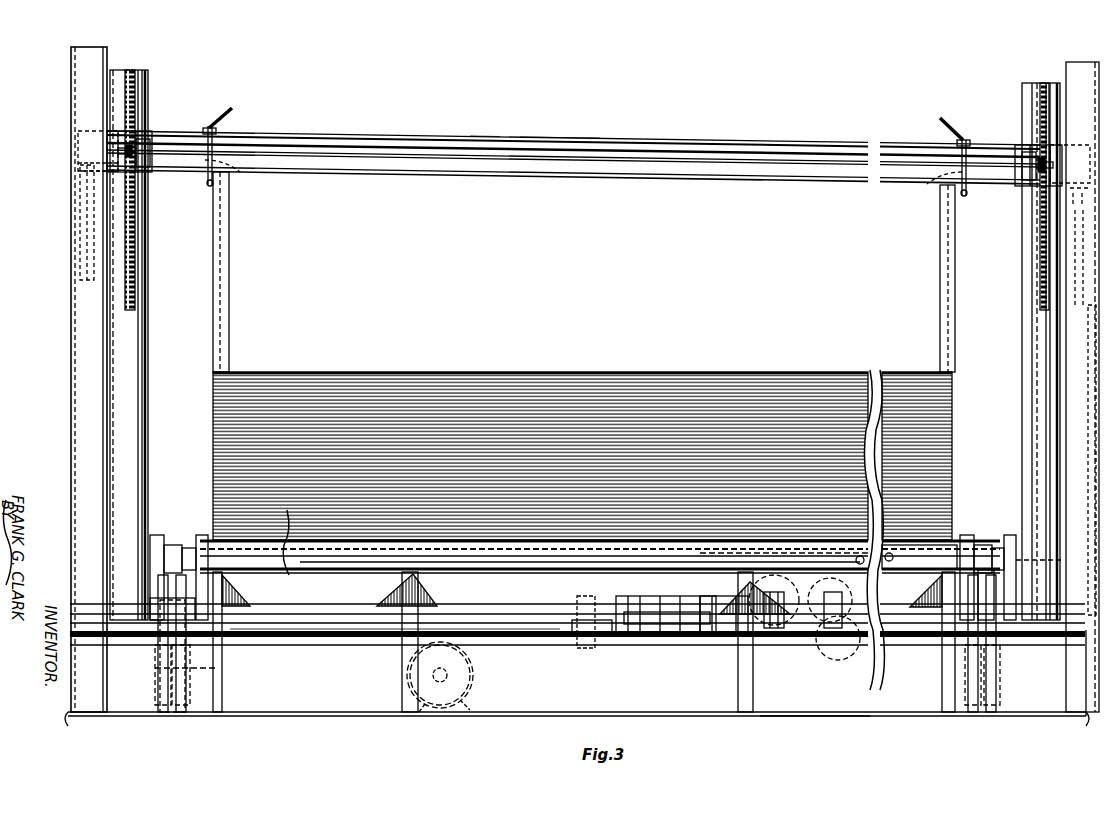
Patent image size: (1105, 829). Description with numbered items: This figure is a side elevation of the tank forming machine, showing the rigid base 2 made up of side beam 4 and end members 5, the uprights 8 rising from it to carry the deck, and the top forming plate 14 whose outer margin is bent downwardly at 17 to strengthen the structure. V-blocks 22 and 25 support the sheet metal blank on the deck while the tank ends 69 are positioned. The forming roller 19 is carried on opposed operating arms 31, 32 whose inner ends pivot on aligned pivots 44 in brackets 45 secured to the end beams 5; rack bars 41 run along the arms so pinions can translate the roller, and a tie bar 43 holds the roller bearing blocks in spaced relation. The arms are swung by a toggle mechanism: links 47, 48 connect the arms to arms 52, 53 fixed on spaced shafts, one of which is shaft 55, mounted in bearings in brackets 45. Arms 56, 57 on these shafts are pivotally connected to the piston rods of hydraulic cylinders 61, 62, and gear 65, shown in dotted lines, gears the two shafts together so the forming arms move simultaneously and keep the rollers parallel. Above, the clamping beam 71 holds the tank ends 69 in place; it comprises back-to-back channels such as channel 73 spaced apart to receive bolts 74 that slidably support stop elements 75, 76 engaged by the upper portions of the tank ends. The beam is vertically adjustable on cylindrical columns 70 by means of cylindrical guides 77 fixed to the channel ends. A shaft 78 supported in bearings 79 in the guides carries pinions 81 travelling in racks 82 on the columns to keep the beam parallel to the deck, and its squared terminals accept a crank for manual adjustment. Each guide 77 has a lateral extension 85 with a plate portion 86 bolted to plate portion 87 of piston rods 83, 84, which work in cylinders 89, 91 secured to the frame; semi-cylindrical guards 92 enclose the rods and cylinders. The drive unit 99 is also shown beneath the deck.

The base 2 is at (824, 712).
The side beam 4 is at (790, 716).
The end member 5 is at (66, 716).
The upright 8 is at (217, 708).
The metallic plate 14 is at (535, 572).
The downwardly bent marginal edge 17 is at (818, 608).
The forming roller 19 is at (486, 572).
The V-block 22 is at (582, 530).
The V-block 25 is at (893, 572).
The operating arm 31 is at (189, 548).
The operating arm 32 is at (172, 545).
The rack bar 41 is at (996, 572).
The tie bar 43 is at (820, 572).
The pivot 44 is at (1048, 560).
The bracket 45 is at (156, 535).
The toggle link 47 is at (192, 668).
The toggle link 48 is at (160, 668).
The arm 52 is at (182, 712).
The arm 53 is at (165, 712).
The shaft 55 is at (302, 628).
The arm 56 is at (650, 652).
The arm 57 is at (704, 652).
The hydraulic cylinder 61 is at (633, 660).
The hydraulic cylinder 62 is at (716, 660).
The gear 65 is at (578, 650).
The tank end 69 is at (230, 306).
The upright column 70 is at (146, 350).
The clamping beam 71 is at (614, 182).
The channel 73 is at (603, 150).
The bolt 74 is at (242, 172).
The stop element 75 is at (207, 186).
The stop element 76 is at (966, 195).
The cylindrical guide 77 is at (146, 135).
The shaft 78 is at (488, 150).
The bearing 79 is at (143, 167).
The pinion 81 is at (125, 152).
The rack 82 is at (135, 252).
The piston rod 83 is at (88, 252).
The piston rod 84 is at (1073, 290).
The lateral extension 85 is at (82, 130).
The plate portion 86 is at (80, 165).
The plate portion 87 is at (80, 173).
The cylinder 89 is at (74, 336).
The cylinder 91 is at (1088, 356).
The semi-cylindrical guard 92 is at (90, 55).
The motor 99 is at (473, 687).